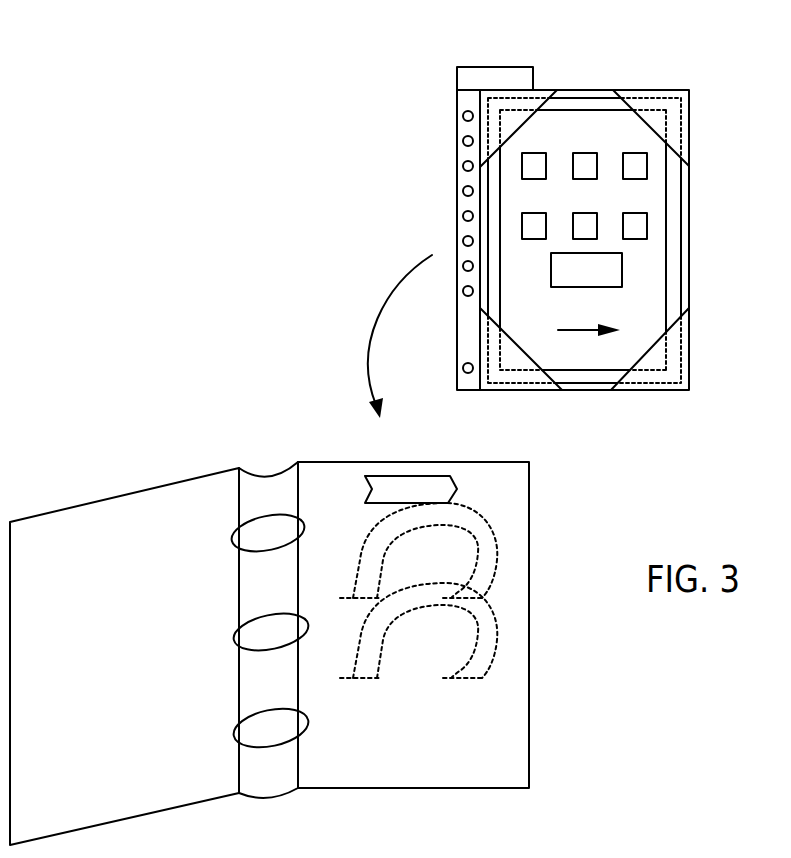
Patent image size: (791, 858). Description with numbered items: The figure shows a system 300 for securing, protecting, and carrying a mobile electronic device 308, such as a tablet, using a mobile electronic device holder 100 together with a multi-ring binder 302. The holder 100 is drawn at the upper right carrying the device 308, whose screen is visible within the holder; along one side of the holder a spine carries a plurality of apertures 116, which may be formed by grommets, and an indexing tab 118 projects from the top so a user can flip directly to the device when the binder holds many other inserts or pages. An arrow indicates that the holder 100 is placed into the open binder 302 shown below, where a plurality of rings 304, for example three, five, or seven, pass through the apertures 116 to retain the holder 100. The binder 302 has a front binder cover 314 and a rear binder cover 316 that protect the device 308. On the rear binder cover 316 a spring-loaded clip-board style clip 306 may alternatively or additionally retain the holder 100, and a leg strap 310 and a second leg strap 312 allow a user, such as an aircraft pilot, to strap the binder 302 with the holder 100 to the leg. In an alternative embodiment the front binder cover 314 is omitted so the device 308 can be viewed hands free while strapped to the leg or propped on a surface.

The mobile electronic device holder 100 is at (583, 90).
The apertures 116 is at (463, 193).
The indexing tab 118 is at (488, 67).
The system 300 is at (183, 155).
The multi-ring binder 302 is at (425, 787).
The rings 304 is at (311, 721).
The spring-loaded clip-board style clip 306 is at (470, 481).
The mobile electronic device 308 is at (650, 270).
The leg strap 310 is at (497, 555).
The leg strap 312 is at (495, 650).
The front binder cover 314 is at (143, 792).
The rear binder cover 316 is at (490, 760).